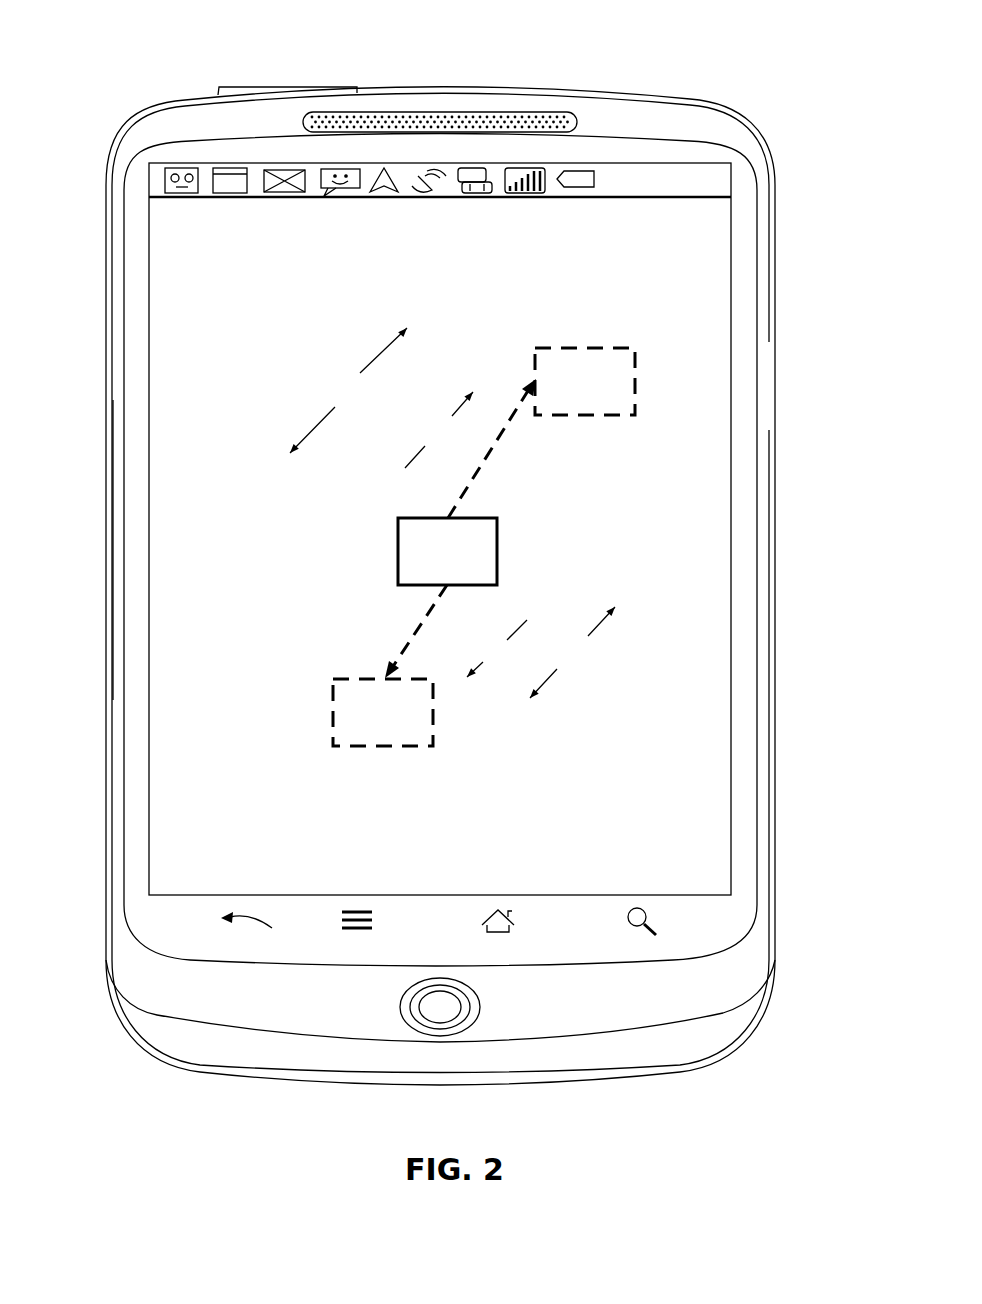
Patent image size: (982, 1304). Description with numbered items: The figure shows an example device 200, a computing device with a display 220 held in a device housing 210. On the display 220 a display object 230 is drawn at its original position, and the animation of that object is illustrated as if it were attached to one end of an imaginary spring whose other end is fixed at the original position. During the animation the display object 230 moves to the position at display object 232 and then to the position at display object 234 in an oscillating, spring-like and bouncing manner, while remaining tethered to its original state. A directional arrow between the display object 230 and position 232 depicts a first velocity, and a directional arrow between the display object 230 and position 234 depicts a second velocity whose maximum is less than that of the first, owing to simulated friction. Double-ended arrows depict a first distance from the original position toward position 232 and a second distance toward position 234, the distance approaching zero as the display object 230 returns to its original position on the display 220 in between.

The device 200 is at (103, 50).
The device housing 210 is at (778, 580).
The display 220 is at (125, 548).
The display object 230 is at (398, 550).
The display object position 232 is at (637, 376).
The additional display object position 234 is at (333, 712).